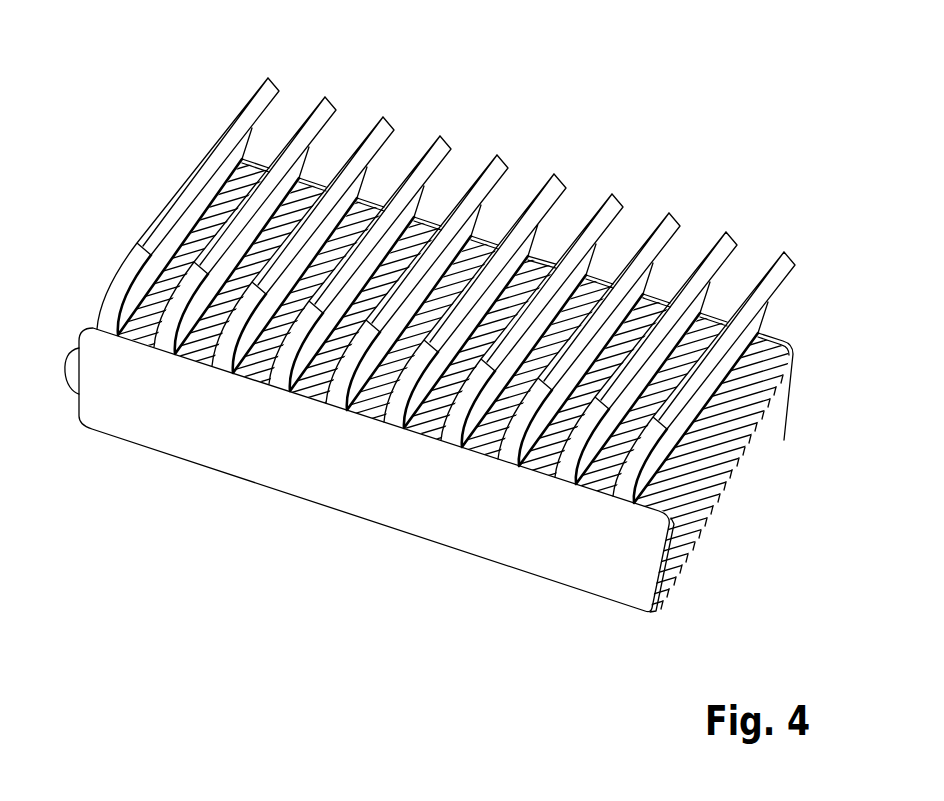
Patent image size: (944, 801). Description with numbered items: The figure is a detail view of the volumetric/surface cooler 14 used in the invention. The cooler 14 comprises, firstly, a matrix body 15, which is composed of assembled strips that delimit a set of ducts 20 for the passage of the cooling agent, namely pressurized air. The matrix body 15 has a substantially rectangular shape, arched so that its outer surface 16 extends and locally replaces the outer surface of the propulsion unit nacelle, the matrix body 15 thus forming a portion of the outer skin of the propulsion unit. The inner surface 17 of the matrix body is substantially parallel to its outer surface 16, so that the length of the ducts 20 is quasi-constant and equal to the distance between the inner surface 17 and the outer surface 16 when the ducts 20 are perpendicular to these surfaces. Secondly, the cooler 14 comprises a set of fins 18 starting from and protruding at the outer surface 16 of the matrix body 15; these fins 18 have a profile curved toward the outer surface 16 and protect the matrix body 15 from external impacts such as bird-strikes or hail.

The volumetric/surface cooler 14 is at (141, 184).
The matrix body 15 is at (738, 480).
The outer surface 16 is at (356, 120).
The inner surface 17 is at (295, 495).
The fins 18 is at (487, 163).
The ducts 20 is at (802, 324).